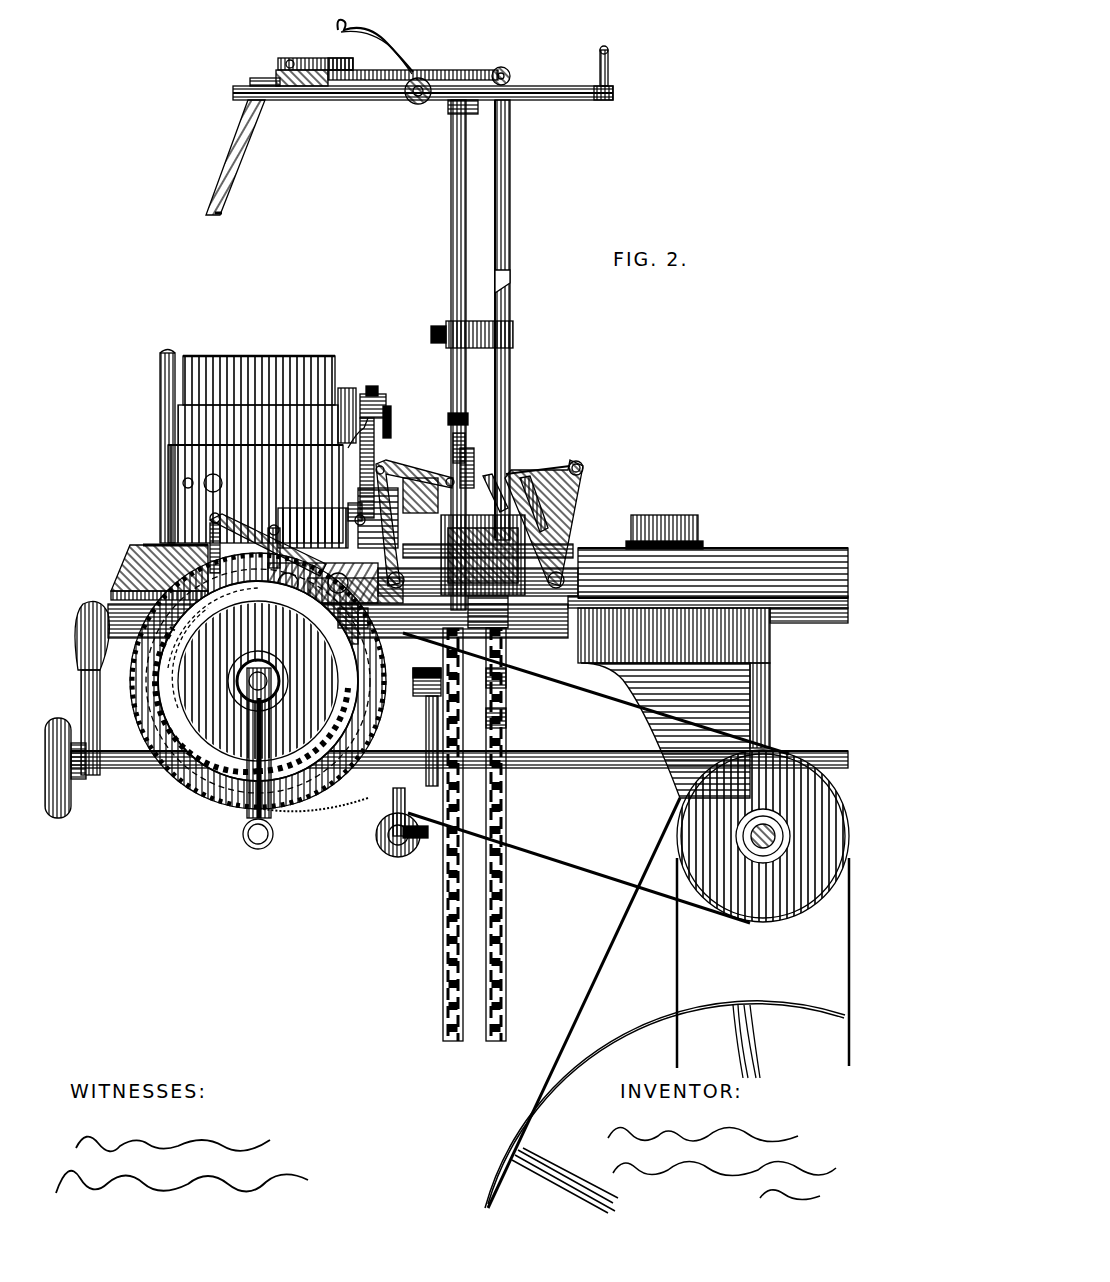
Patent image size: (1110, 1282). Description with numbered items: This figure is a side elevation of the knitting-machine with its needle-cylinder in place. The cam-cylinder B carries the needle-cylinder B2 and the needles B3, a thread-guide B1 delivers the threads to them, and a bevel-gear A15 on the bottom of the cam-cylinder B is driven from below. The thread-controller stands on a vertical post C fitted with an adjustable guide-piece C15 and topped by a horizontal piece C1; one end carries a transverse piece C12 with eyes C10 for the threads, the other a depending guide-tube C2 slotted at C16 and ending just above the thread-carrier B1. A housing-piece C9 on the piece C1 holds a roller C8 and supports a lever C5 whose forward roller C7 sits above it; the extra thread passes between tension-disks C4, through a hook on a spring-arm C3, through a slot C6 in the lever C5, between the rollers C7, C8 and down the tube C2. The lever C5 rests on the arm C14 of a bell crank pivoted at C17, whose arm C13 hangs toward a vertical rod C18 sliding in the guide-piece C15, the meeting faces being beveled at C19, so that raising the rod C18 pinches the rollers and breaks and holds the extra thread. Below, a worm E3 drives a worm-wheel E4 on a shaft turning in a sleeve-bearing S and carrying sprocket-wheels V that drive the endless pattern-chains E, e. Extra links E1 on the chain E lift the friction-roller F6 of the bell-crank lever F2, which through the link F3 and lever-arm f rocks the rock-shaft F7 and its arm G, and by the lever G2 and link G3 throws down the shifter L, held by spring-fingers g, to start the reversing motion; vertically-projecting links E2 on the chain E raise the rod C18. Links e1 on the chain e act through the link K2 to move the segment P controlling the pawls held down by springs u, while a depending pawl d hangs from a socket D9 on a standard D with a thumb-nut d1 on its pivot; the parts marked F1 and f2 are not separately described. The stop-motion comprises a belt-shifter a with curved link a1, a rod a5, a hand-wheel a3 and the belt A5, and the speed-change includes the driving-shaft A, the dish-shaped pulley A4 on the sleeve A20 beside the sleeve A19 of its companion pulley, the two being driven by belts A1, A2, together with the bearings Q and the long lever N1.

The vertical post C is at (443, 244).
The horizontal piece C1 is at (340, 90).
The guide-tube C2 is at (230, 140).
The spring-arm C3 is at (386, 36).
The tension-disks C4 is at (404, 96).
The lever C5 is at (334, 50).
The slot C6 is at (298, 50).
The roller C7 is at (282, 52).
The roller C8 is at (290, 88).
The housing-piece C9 is at (264, 72).
The eyes C10 is at (592, 56).
The transverse piece C12 is at (600, 96).
The bell-crank arm C13 is at (500, 176).
The bell-crank arm C14 is at (458, 64).
The guide-piece C15 is at (506, 330).
The slot C16 is at (212, 176).
The pivot C17 is at (495, 64).
The vertical rod C18 is at (498, 400).
The beveled faces C19 is at (504, 276).
The cam-cylinder B is at (158, 490).
The thread-guide B1 is at (150, 350).
The needle-cylinder B2 is at (334, 410).
The needles B3 is at (200, 351).
The vertical standard D is at (361, 468).
The socket D9 is at (374, 408).
The depending pawl d is at (337, 422).
The thumb-nut d1 is at (386, 412).
The link K2 is at (404, 462).
The feed arm F1 is at (466, 448).
The bell-crank lever F2 is at (563, 515).
The link F3 is at (566, 456).
The friction-roller F6 is at (684, 619).
The rock-shaft F7 is at (529, 462).
The lever-arm f is at (495, 488).
The pawl link f2 is at (536, 516).
The rocking arm G is at (473, 468).
The lever G2 is at (231, 516).
The link G3 is at (200, 526).
The spring-fingers g is at (252, 546).
The vertically-movable rod a5 is at (460, 438).
The horizontal segment P is at (358, 507).
The springs u is at (362, 521).
The sleeve-bearing S is at (293, 615).
The bolt-shifter L is at (140, 604).
The hand-wheel a3 is at (50, 710).
The long lever N1 is at (459, 774).
The driving-shaft A is at (258, 681).
The dish-shaped pulley A4 is at (220, 673).
The worm E3 is at (205, 658).
The worm-wheel E4 is at (213, 628).
The bearings Q is at (352, 790).
The belt A5 is at (313, 809).
The bevel-gear A15 is at (368, 827).
The belt-shifter a is at (380, 836).
The curved link a1 is at (426, 733).
The pattern-chain e is at (452, 940).
The laterally-projecting links e1 is at (440, 720).
The pattern-chain E is at (500, 930).
The extra links E1 is at (500, 682).
The vertically-projecting links E2 is at (500, 700).
The sprocket-wheel V is at (488, 623).
The sleeve A19 is at (763, 836).
The sleeve A20 is at (738, 824).
The belt A2 is at (672, 942).
The belt A1 is at (584, 966).